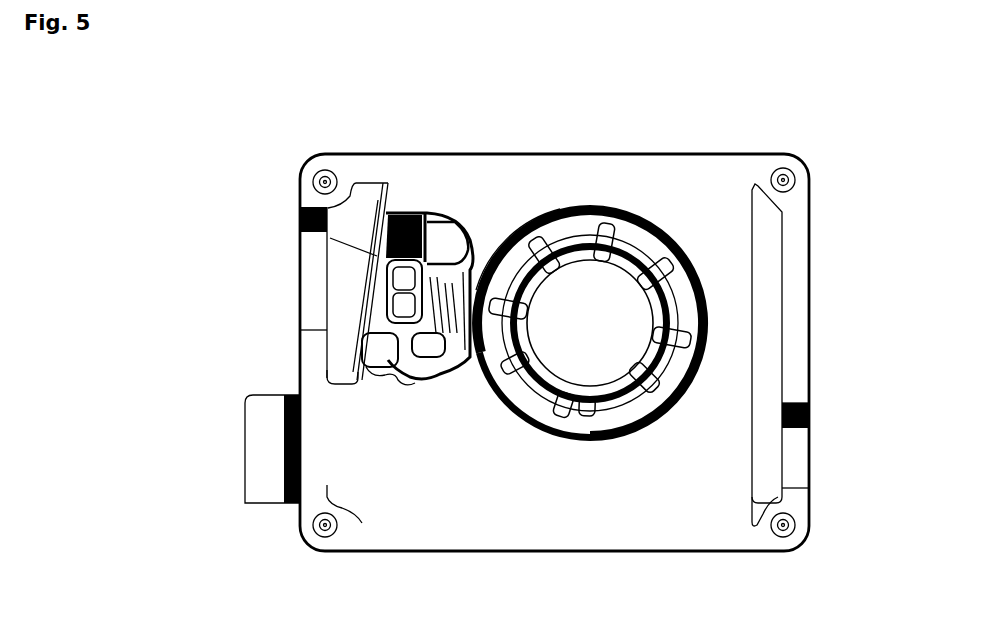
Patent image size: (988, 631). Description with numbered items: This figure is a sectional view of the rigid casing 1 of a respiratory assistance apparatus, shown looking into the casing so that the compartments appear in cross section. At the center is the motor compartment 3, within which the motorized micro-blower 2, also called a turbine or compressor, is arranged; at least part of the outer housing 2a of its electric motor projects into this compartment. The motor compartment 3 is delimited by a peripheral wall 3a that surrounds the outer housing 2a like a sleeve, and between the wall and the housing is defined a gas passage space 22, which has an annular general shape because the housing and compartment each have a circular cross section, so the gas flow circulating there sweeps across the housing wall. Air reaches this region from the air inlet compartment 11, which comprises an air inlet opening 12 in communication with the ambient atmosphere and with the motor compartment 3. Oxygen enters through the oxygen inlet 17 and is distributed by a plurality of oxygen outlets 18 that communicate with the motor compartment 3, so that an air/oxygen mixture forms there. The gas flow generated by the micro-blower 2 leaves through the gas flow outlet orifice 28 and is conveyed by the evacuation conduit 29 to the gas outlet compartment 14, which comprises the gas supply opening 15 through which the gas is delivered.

The rigid casing 1 is at (400, 552).
The motorized micro-blower 2 is at (574, 285).
The outer housing 2a is at (574, 285).
The motor compartment 3 is at (637, 257).
The peripheral wall 3a is at (520, 277).
The air inlet compartment 11 is at (772, 240).
The air inlet opening 12 is at (809, 440).
The gas outlet compartment 14 is at (362, 290).
The gas supply opening 15 is at (308, 300).
The oxygen inlet 17 is at (245, 472).
The oxygen outlets 18 is at (508, 357).
The gas passage space 22 is at (637, 257).
The gas flow outlet orifice 28 is at (298, 230).
The evacuation conduit 29 is at (422, 210).